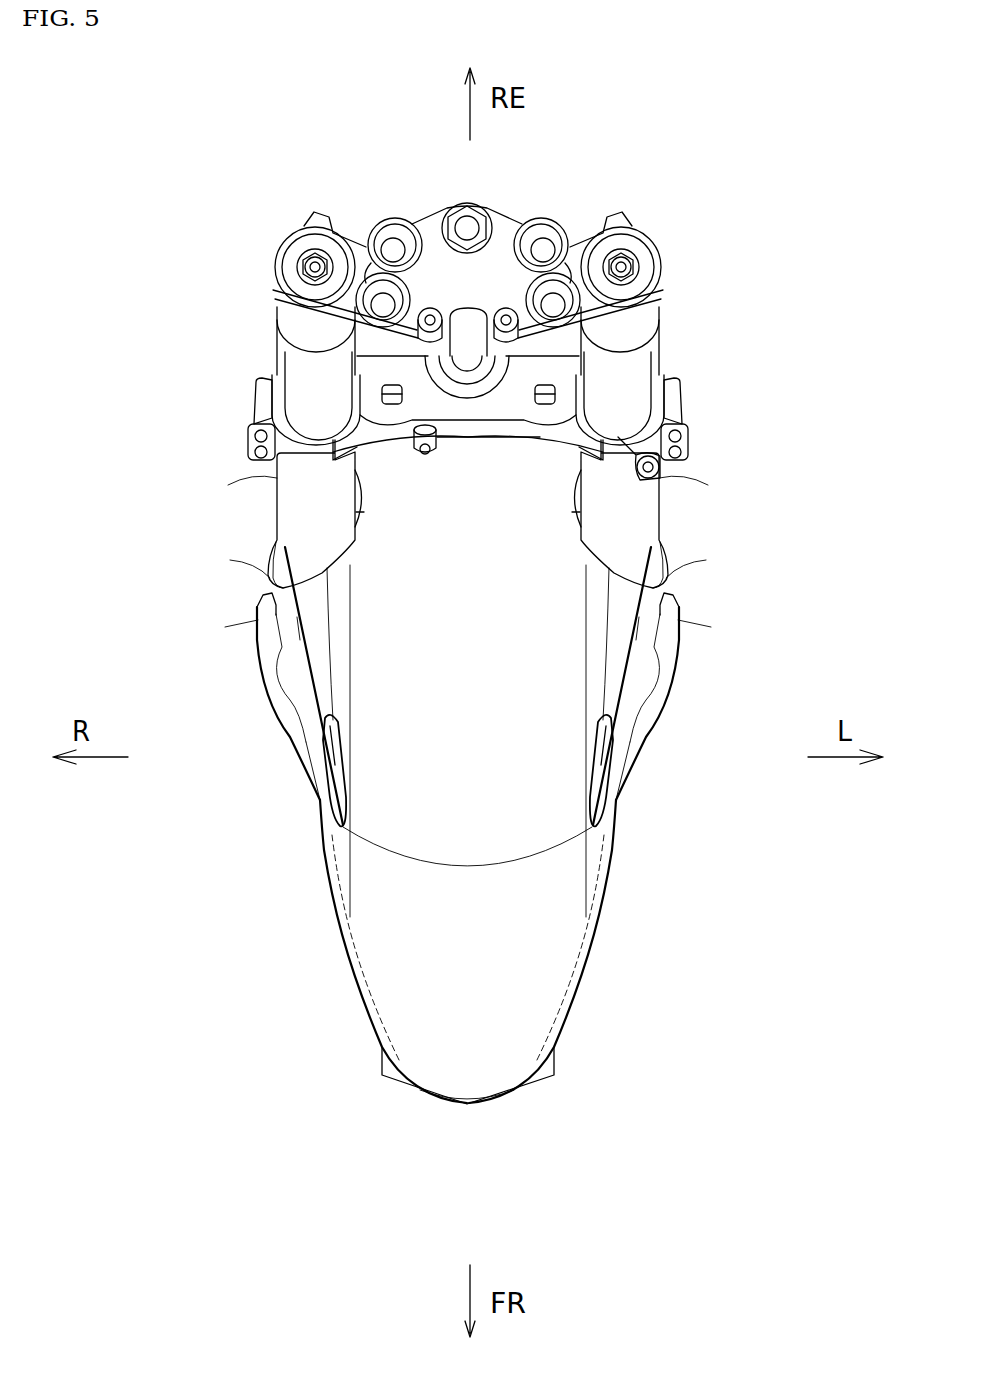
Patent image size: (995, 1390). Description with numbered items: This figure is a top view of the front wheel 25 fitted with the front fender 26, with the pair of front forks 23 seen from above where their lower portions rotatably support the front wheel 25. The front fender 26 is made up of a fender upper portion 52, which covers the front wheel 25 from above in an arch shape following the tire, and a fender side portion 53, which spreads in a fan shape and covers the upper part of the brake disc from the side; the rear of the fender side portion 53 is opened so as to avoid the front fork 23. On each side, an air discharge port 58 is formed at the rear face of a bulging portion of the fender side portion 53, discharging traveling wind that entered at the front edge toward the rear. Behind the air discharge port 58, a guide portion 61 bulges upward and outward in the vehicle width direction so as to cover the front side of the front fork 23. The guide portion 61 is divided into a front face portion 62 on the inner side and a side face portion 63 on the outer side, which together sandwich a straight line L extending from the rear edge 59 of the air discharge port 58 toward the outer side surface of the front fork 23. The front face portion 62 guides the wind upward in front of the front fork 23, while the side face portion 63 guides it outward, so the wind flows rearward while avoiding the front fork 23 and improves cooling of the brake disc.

The front fork 23 is at (277, 475).
The front wheel 25 is at (382, 1080).
The front fender 26 is at (600, 1026).
The fender upper portion 52 is at (494, 1082).
The fender side portion 53 is at (340, 927).
The air discharge port 58 is at (342, 779).
The rear edge of the air discharge port 59 is at (343, 740).
The guide portion 61 is at (280, 590).
The front face portion 62 is at (337, 657).
The side face portion 63 is at (288, 640).
The straight line L is at (297, 617).